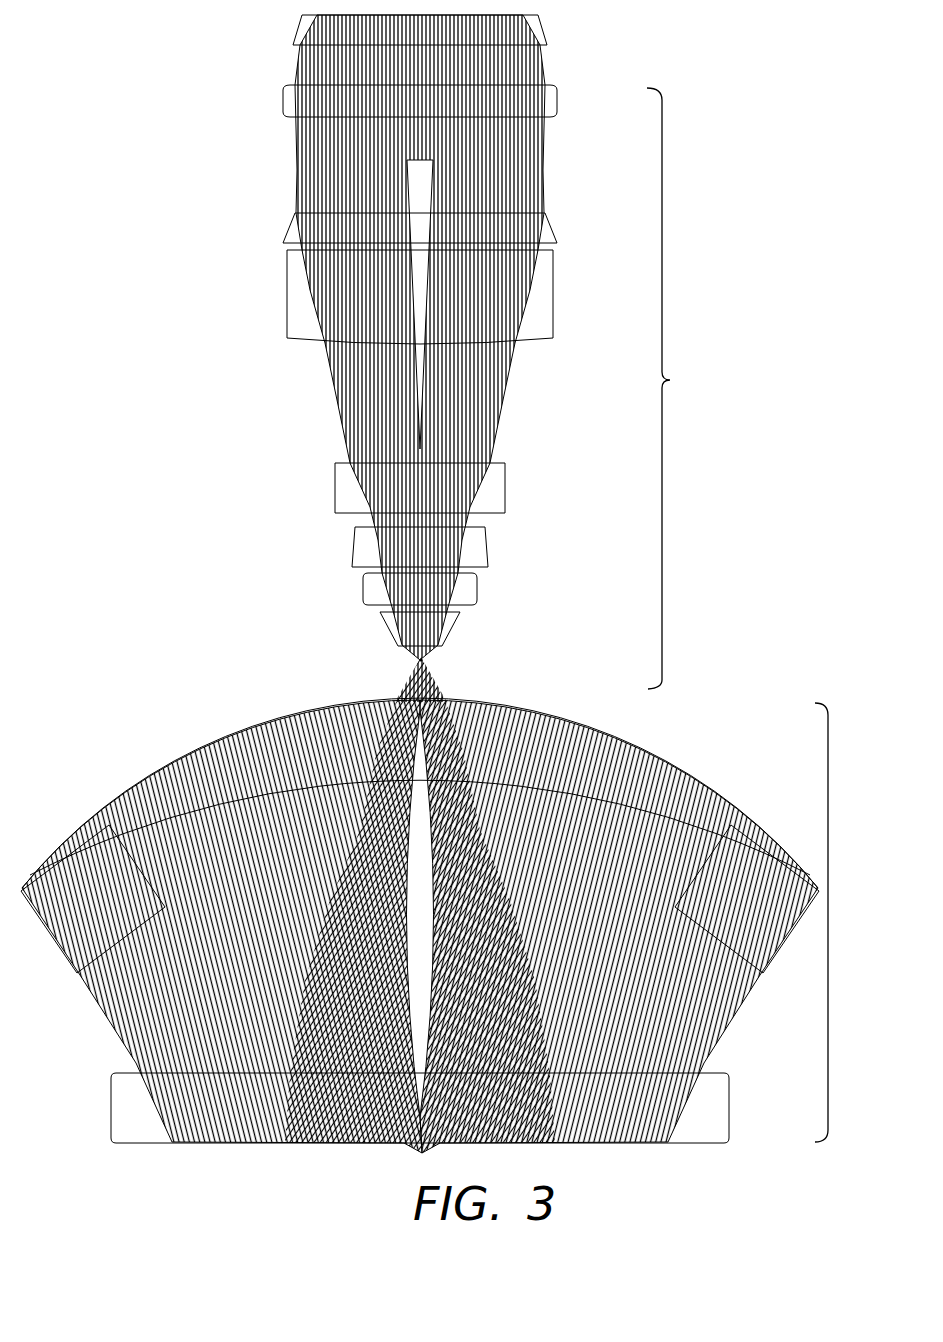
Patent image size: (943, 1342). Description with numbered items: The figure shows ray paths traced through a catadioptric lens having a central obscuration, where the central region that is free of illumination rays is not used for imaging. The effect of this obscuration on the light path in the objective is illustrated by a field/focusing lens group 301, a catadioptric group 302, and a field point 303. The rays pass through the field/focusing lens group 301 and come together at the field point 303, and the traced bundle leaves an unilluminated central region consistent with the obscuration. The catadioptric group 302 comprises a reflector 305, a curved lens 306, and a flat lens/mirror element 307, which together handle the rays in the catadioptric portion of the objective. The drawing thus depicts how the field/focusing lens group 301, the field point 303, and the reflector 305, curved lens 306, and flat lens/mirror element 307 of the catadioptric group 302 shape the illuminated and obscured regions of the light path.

The field/focusing lens group 301 is at (670, 380).
The catadioptric group 302 is at (828, 922).
The field point 303 is at (413, 658).
The reflector 305 is at (60, 842).
The curved lens 306 is at (45, 953).
The flat lens/mirror element 307 is at (112, 1117).